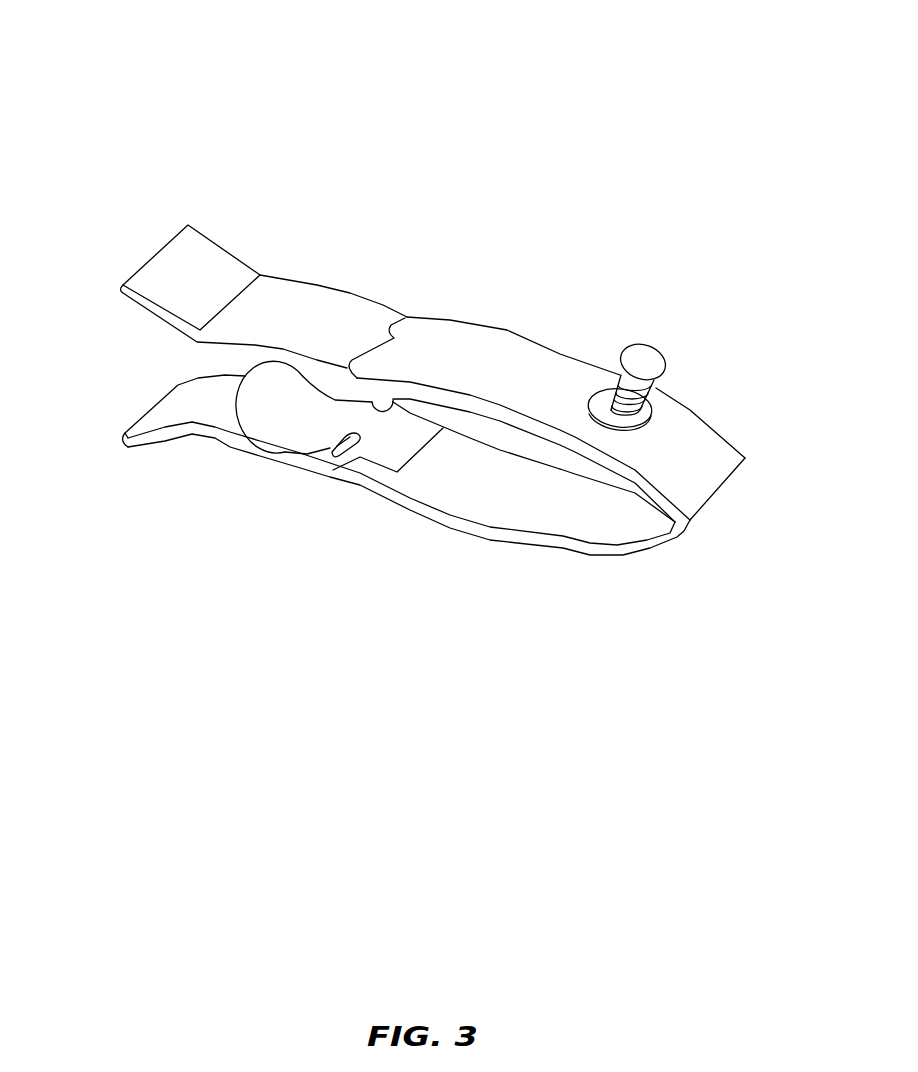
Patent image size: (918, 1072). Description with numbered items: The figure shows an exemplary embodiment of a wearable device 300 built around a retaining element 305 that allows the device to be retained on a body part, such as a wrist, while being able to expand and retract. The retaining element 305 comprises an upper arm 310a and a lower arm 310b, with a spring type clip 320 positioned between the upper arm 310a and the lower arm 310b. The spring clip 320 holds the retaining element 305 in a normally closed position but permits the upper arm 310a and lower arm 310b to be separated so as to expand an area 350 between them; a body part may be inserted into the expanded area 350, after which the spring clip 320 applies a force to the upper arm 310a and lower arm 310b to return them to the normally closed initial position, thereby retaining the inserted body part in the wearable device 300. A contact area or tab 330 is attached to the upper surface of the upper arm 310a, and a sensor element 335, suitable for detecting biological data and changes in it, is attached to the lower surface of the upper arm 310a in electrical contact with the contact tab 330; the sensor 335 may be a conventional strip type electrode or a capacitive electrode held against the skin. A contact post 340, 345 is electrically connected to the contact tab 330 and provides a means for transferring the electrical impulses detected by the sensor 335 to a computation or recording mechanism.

The wearable device 300 is at (413, 195).
The retaining element 305 is at (187, 407).
The upper arm 310a is at (193, 288).
The lower arm 310b is at (457, 507).
The spring type clip 320 is at (305, 420).
The contact area or tab 330 is at (585, 392).
The sensor element 335 is at (593, 470).
The contact post 340 is at (653, 402).
The contact post 345 is at (631, 333).
The area 350 is at (518, 440).